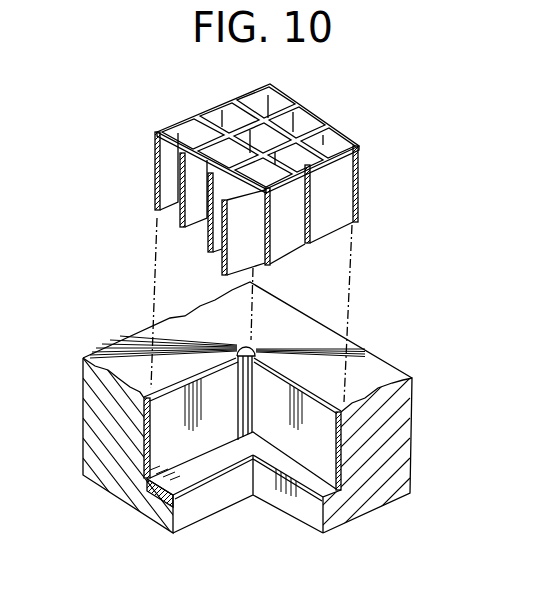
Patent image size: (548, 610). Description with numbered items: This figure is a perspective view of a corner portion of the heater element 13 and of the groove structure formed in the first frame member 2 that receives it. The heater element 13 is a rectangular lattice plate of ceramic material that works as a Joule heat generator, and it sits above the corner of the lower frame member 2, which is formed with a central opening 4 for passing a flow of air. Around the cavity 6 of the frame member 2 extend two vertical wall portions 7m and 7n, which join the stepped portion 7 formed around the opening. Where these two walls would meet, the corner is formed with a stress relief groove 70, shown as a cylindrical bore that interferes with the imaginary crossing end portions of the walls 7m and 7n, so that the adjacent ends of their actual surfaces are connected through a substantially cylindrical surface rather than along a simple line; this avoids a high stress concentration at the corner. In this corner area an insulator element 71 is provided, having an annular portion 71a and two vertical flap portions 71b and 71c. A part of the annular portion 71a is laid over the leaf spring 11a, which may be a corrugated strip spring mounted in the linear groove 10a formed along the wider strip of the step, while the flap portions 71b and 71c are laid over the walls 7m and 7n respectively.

The heater element 13 is at (305, 118).
The stress relief groove 70 is at (258, 345).
The vertical wall portion 7m is at (233, 356).
The vertical wall portion 7n is at (260, 352).
The cavity 6 is at (170, 405).
The vertical flap portion 71b is at (160, 450).
The vertical flap portion 71c is at (315, 415).
The first frame member 2 is at (400, 457).
The central opening 4 is at (302, 510).
The annular portion 71a is at (235, 458).
The linear groove 10a is at (167, 492).
The leaf spring 11a is at (172, 507).
The insulator element 71 is at (343, 468).
The stepped portion 7 is at (334, 490).